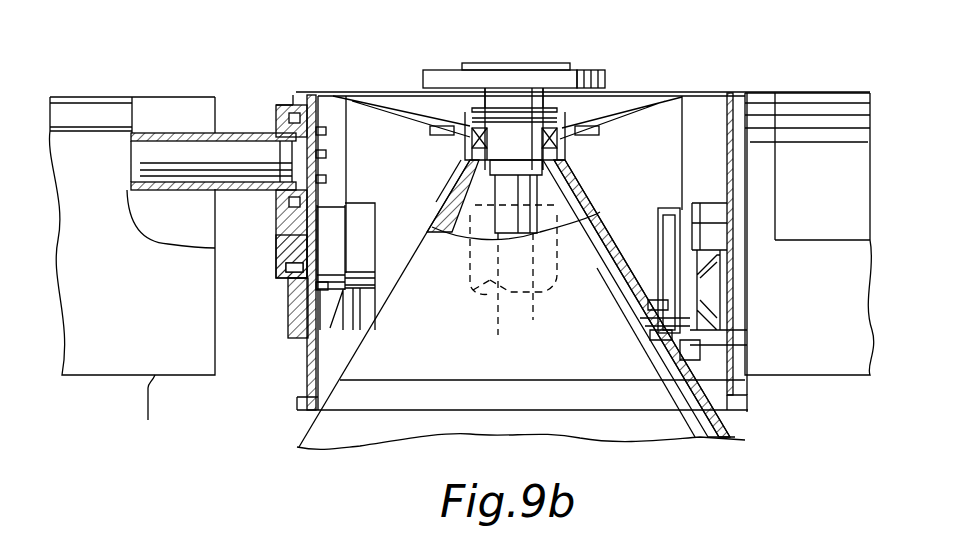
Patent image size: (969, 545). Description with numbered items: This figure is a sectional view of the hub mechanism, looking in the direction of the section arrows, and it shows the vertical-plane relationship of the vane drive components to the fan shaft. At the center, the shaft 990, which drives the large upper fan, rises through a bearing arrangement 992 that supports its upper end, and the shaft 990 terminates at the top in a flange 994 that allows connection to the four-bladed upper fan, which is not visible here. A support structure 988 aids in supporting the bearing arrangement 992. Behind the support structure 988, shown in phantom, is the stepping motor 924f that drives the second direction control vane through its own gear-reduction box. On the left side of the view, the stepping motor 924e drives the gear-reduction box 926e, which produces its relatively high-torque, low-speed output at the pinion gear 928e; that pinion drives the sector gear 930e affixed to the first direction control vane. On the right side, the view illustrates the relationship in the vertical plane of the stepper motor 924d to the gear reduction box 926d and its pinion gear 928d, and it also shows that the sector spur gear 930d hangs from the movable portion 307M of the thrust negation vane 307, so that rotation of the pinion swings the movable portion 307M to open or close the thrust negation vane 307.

The flange 994 is at (601, 70).
The bearing arrangement 992 is at (575, 132).
The shaft 990 is at (565, 200).
The support structure 988 is at (468, 363).
The stepping motor 924f is at (490, 298).
The gear-reduction box 926e is at (340, 208).
The stepping motor 924e is at (377, 221).
The sector gear 930e is at (276, 255).
The pinion gear 928e is at (288, 283).
The stepper motor 924d is at (746, 298).
The gear reduction box 926d is at (705, 353).
The sector spur gear 930d is at (655, 304).
The pinion gear 928d is at (645, 333).
The movable portion 307M is at (828, 92).
The thrust negation vane 307 is at (822, 375).